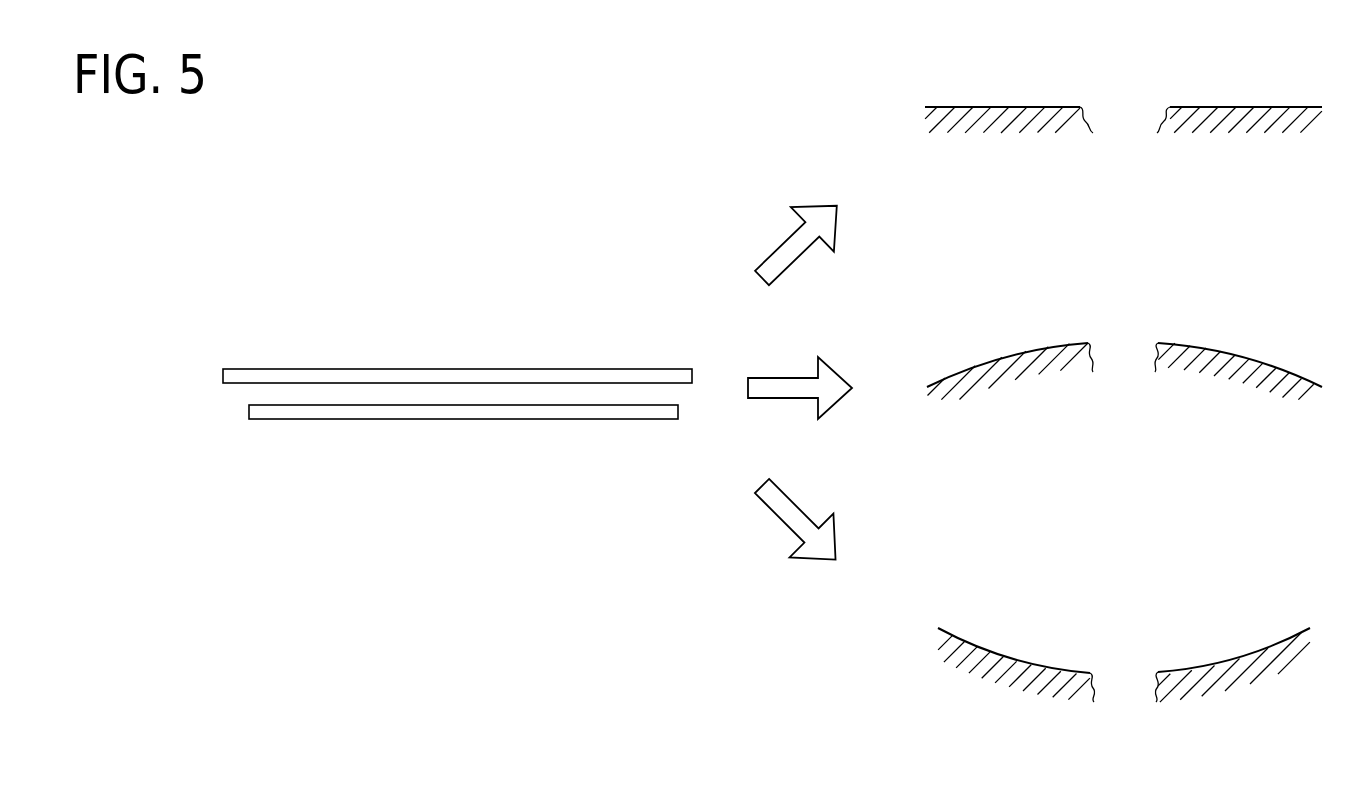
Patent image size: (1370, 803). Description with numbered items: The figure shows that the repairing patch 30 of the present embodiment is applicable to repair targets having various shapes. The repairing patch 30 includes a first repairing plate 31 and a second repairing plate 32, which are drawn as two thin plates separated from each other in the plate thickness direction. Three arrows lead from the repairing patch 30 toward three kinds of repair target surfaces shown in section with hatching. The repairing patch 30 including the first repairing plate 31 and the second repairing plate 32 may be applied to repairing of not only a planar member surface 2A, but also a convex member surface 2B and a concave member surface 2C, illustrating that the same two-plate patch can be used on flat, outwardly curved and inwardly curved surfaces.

The repairing patch 30 is at (643, 308).
The first repairing plate 31 is at (315, 419).
The second repairing plate 32 is at (273, 369).
The planar member surface 2A is at (1278, 107).
The convex member surface 2B is at (1270, 357).
The concave member surface 2C is at (1238, 658).